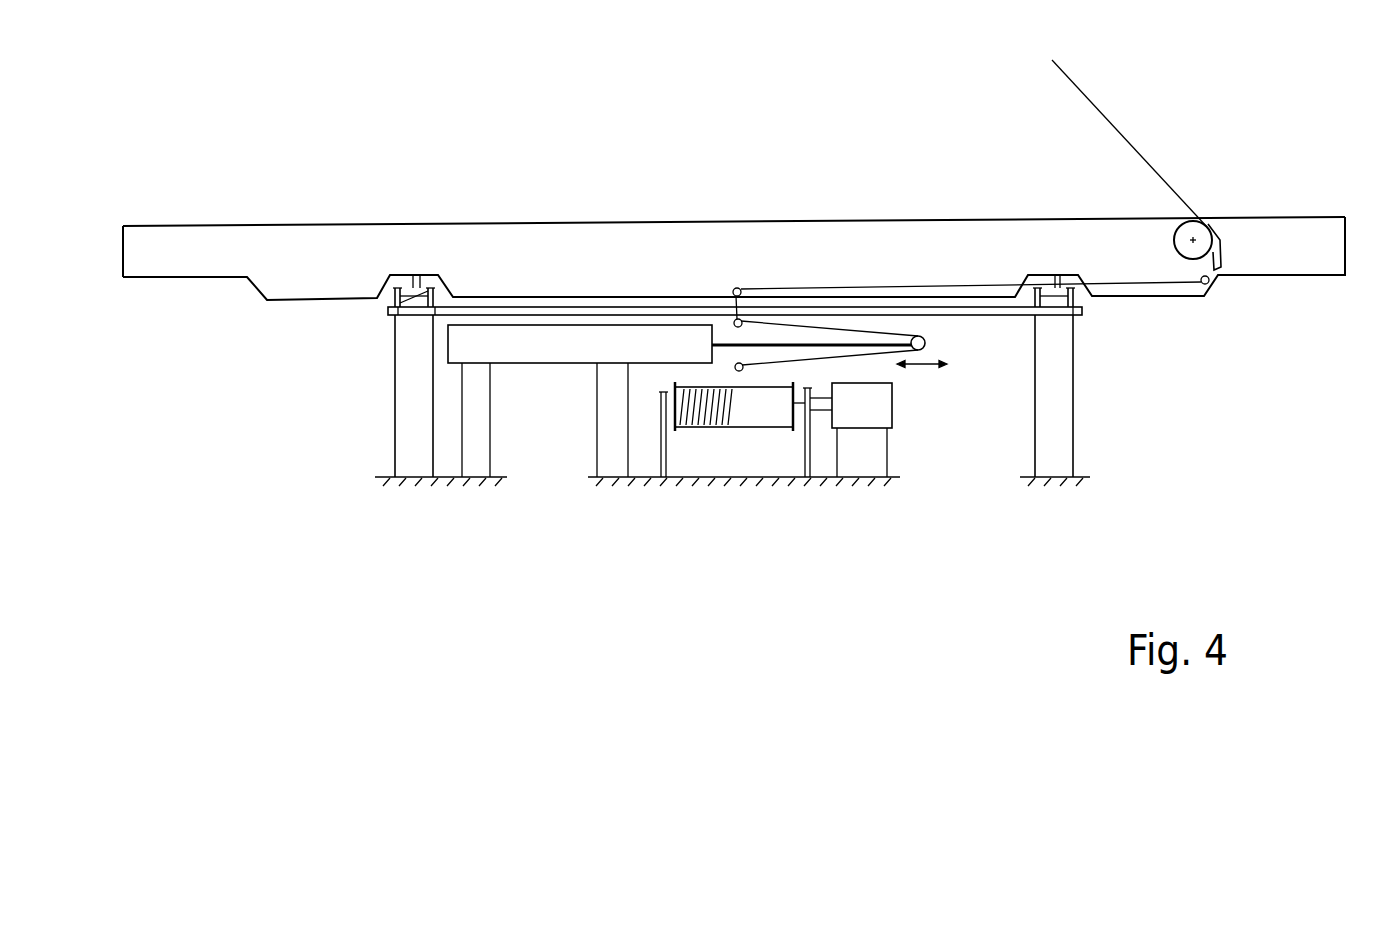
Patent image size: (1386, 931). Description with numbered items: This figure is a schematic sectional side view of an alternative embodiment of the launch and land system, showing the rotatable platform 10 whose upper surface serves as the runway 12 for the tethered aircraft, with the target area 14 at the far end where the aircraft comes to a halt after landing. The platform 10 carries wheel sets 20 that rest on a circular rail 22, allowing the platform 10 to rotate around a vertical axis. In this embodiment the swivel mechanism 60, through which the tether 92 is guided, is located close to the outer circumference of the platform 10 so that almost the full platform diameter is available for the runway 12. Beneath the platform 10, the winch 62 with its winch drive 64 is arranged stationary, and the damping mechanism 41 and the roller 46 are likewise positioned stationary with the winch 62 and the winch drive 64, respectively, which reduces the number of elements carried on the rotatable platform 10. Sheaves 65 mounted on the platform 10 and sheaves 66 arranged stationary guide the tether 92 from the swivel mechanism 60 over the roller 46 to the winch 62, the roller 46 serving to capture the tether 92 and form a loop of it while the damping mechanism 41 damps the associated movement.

The platform 10 is at (455, 250).
The runway 12 is at (798, 223).
The target area 14 is at (242, 225).
The wheel sets 20 is at (388, 316).
The circular rail 22 is at (510, 310).
The damping mechanism 41 is at (538, 345).
The roller 46 is at (921, 350).
The swivel mechanism 60 is at (1209, 240).
The winch 62 is at (765, 408).
The winch drive 64 is at (862, 407).
The sheaves 65 is at (735, 289).
The sheaves 66 is at (735, 318).
The tether 92 is at (1113, 133).